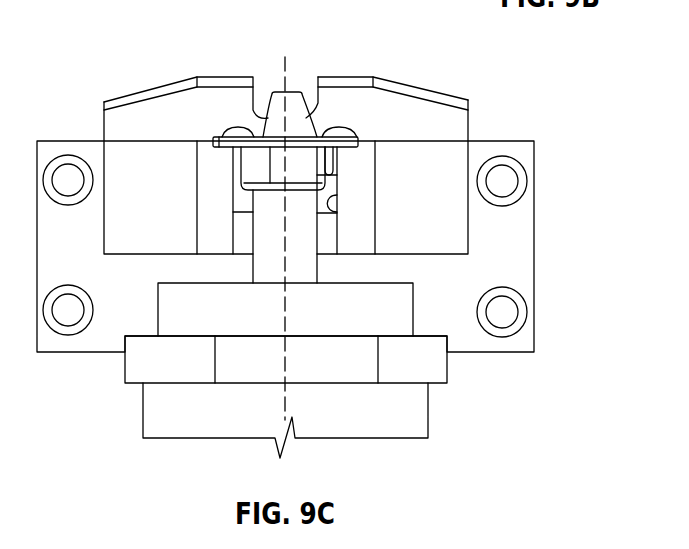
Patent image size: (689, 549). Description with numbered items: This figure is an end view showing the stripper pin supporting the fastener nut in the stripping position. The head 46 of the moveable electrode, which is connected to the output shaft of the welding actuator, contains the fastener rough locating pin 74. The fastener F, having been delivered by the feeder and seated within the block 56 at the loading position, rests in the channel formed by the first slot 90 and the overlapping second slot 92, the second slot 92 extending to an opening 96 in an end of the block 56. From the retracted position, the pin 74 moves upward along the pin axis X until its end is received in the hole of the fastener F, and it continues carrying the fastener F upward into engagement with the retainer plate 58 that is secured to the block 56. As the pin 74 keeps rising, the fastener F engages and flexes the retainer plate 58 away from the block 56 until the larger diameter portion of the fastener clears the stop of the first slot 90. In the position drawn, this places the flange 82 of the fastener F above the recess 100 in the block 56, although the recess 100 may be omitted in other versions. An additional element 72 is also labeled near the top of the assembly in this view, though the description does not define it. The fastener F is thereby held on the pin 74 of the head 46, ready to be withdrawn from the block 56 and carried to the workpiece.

The recess 100 is at (218, 137).
The central projection 72 is at (265, 78).
The flange 82 is at (318, 137).
The retainer plate 58 is at (413, 117).
The block 56 is at (455, 155).
The fastener F is at (338, 177).
The first slot 90 is at (337, 208).
The fastener rough locating pin 74 is at (307, 240).
The head 46 is at (437, 365).
The opening 96 is at (233, 198).
The second slot 92 is at (328, 248).
The pin axis X is at (286, 410).